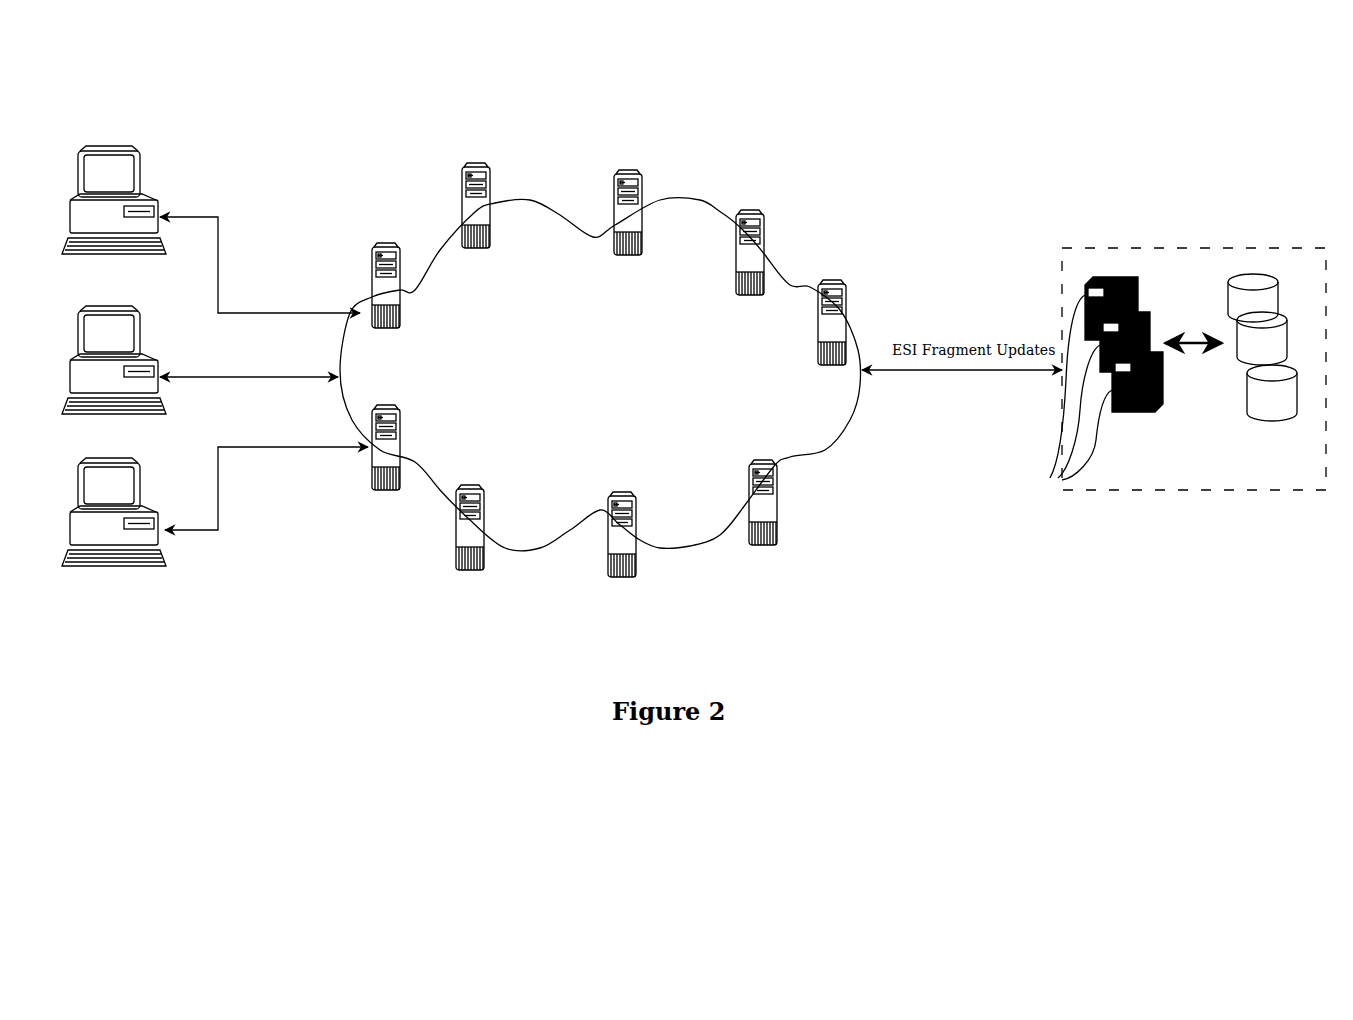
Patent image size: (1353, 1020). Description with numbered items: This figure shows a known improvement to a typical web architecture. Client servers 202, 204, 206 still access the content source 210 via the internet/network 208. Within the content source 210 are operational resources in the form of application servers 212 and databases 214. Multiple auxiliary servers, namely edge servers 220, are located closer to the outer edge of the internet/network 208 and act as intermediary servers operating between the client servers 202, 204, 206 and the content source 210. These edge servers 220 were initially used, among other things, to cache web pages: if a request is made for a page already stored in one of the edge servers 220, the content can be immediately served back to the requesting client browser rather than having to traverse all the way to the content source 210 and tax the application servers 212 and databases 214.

The client server 202 is at (140, 167).
The client server 204 is at (140, 335).
The client server 206 is at (140, 487).
The internet/network 208 is at (722, 213).
The content source 210 is at (1194, 248).
The application servers 212 is at (1062, 468).
The databases 214 is at (1262, 420).
The edge servers 220 is at (605, 578).